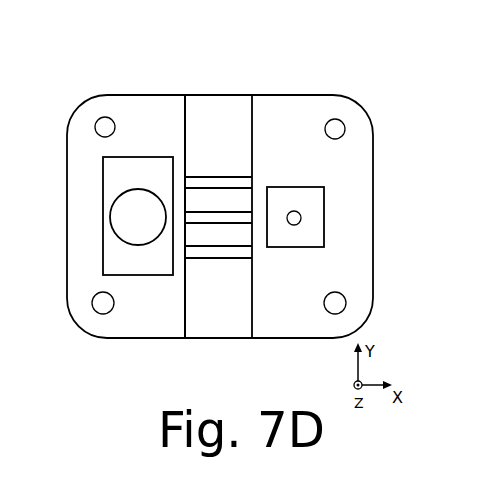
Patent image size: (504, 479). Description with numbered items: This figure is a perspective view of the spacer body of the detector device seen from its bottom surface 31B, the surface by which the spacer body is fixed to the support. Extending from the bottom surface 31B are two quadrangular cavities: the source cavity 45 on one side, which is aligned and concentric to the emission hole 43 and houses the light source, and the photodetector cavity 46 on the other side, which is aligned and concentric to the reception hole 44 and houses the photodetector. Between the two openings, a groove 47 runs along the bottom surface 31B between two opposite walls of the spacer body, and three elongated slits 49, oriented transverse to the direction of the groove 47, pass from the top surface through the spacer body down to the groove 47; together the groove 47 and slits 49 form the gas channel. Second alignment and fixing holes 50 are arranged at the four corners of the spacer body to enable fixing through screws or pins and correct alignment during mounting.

The bottom surface 31B is at (287, 112).
The emission hole 43 is at (117, 222).
The reception hole 44 is at (300, 218).
The source cavity 45 is at (113, 173).
The photodetector cavity 46 is at (310, 193).
The groove 47 is at (217, 124).
The slits 49 is at (197, 185).
The second alignment and fixing holes 50 is at (106, 125).